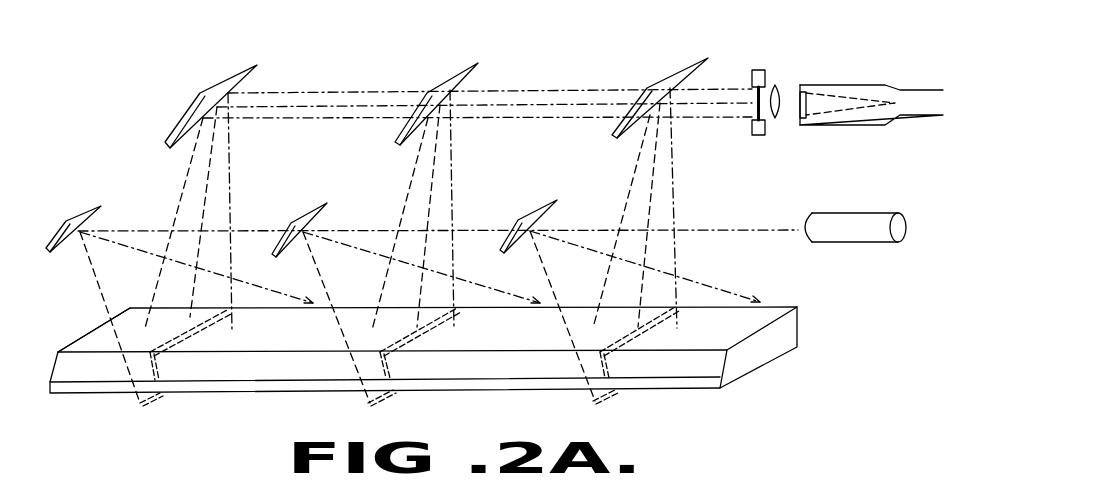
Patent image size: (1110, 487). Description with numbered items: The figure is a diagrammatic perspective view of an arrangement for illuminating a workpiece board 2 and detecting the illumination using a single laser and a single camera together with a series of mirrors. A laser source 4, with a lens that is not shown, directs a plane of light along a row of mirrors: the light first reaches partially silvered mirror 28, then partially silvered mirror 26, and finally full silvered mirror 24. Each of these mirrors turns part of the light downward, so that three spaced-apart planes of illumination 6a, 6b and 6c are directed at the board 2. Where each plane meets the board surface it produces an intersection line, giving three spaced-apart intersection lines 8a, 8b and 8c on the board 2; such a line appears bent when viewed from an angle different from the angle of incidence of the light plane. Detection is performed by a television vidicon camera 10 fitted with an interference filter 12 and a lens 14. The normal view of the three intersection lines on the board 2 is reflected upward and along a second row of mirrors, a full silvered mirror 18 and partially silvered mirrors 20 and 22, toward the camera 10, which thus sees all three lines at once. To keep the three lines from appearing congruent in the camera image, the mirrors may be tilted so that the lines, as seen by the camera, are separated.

The board 2 is at (792, 337).
The laser source 4 is at (840, 213).
The plane of illumination 6a is at (100, 288).
The plane of illumination 6b is at (323, 283).
The plane of illumination 6c is at (548, 273).
The intersection line 8a is at (177, 338).
The intersection line 8b is at (403, 338).
The intersection line 8c is at (623, 338).
The television vidicon camera 10 is at (845, 85).
The interference filter 12 is at (759, 69).
The lens 14 is at (779, 86).
The full silvered mirror 18 is at (230, 84).
The partially silvered mirror 20 is at (437, 86).
The partially silvered mirror 22 is at (653, 84).
The full silvered mirror 24 is at (90, 201).
The partially silvered mirror 26 is at (322, 200).
The partially silvered mirror 28 is at (550, 198).